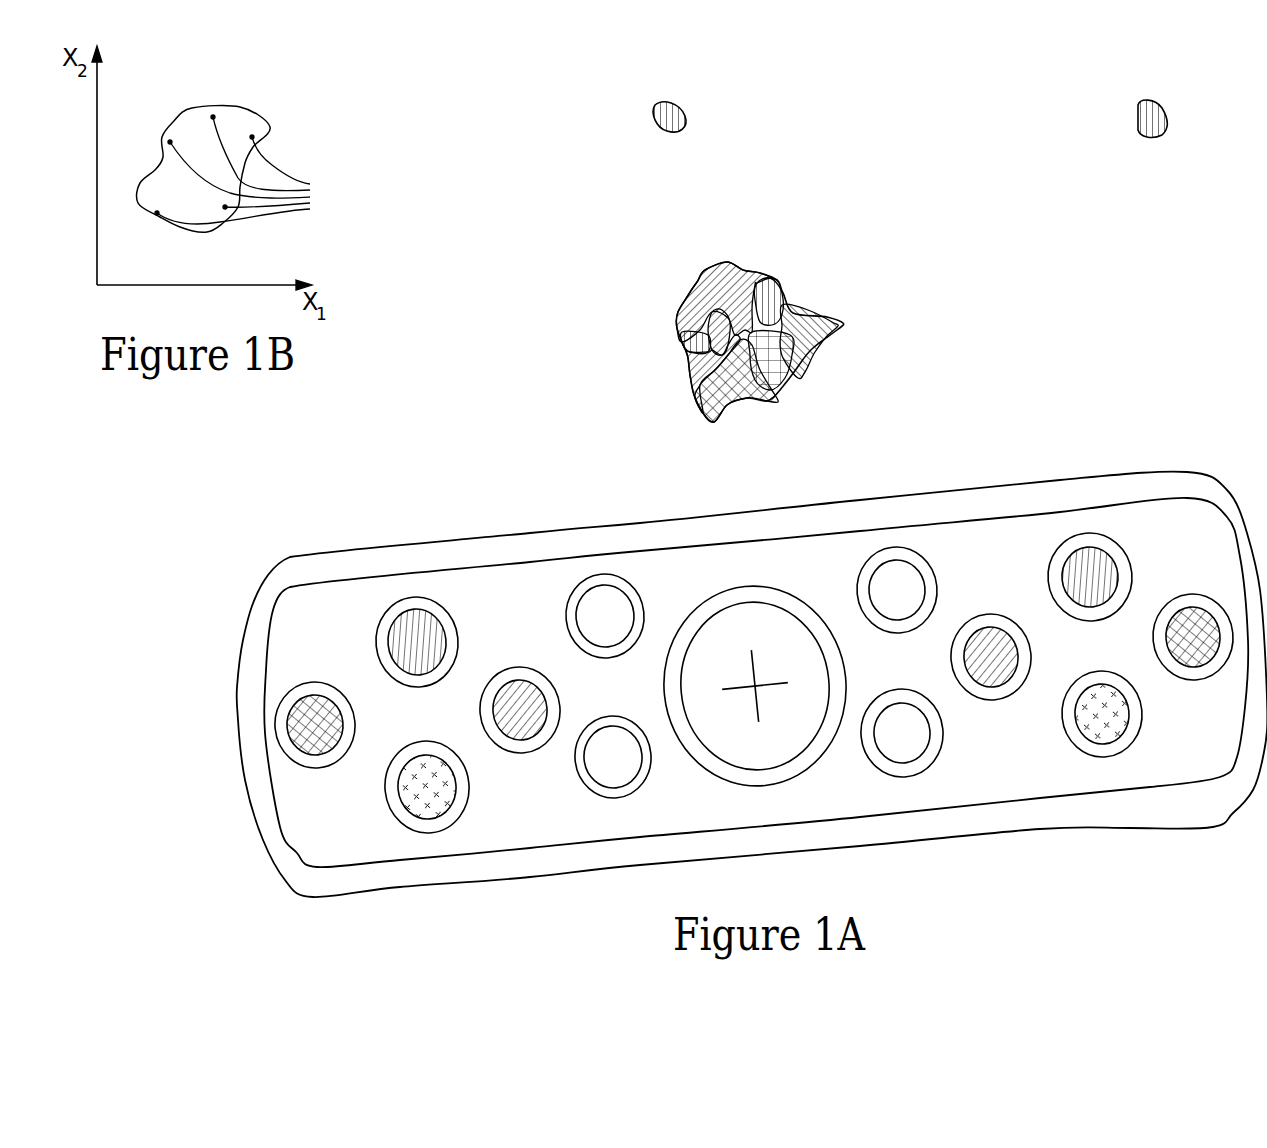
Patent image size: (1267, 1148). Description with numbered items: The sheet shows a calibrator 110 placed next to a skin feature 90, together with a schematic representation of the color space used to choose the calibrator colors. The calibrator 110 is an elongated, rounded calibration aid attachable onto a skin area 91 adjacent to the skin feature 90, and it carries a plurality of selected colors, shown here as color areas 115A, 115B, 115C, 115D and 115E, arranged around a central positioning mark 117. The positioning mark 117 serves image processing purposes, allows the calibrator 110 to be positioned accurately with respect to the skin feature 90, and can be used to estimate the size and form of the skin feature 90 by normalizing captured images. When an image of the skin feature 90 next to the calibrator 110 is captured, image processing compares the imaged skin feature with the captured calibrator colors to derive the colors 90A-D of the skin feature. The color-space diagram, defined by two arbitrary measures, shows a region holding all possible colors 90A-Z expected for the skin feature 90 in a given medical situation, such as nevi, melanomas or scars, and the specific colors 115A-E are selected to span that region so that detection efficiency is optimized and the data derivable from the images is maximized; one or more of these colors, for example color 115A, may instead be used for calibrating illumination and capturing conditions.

In FIG. 1A, the skin feature 90 is at (723, 263).
In FIG. 1A, the skin area 91 is at (921, 194).
In FIG. 1A, the colors of captured skin feature 90A-D is at (748, 268).
In FIG. 1A, the calibrator 110 is at (512, 533).
In FIG. 1A, the positioning mark 117 is at (726, 650).
In FIG. 1A, the selected color 115A is at (897, 586).
In FIG. 1A, the selected color 115B is at (1099, 565).
In FIG. 1A, the selected color 115C is at (988, 652).
In FIG. 1A, the selected color 115D is at (1196, 617).
In FIG. 1A, the selected color 115E is at (1100, 713).
In FIG. 1B, the possible colors 90A-Z is at (270, 118).
In FIG. 1B, the selected colors 115A-E is at (288, 169).